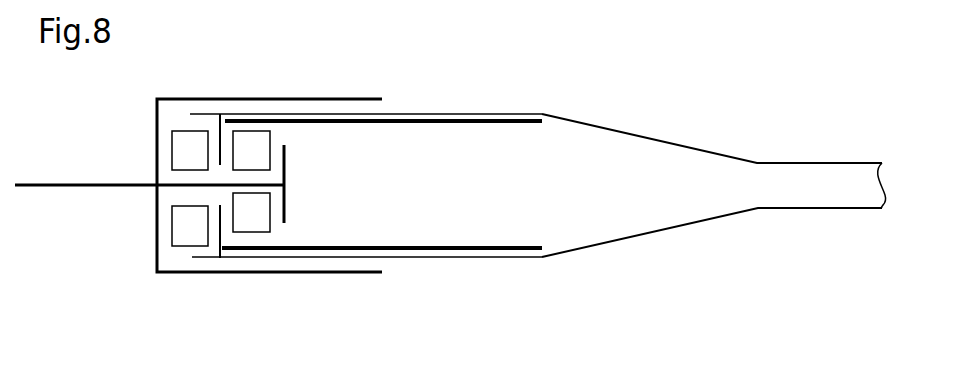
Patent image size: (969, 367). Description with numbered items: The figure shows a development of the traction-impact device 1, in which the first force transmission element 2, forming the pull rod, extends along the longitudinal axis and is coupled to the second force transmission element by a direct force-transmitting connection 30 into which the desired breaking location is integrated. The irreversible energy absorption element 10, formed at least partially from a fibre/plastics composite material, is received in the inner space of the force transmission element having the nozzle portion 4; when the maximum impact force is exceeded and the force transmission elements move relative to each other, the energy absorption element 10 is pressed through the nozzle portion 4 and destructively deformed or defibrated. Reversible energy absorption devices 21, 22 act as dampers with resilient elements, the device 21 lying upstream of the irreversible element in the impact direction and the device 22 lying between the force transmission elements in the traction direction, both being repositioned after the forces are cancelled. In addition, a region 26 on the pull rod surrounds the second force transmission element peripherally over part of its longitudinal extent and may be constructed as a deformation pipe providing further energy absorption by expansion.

The traction-impact device 1 is at (515, 85).
The first force transmission element 2 is at (45, 184).
The nozzle portion 4 is at (643, 241).
The irreversible energy absorption element 10 is at (482, 252).
The reversible energy absorption device 21 is at (187, 232).
The reversible energy absorption device 22 is at (252, 222).
The region 26 is at (321, 272).
The force-transmitting connection 30 is at (275, 194).